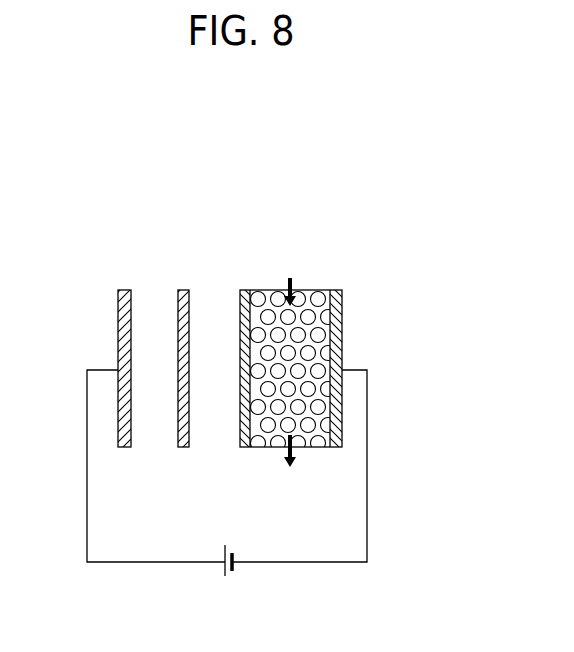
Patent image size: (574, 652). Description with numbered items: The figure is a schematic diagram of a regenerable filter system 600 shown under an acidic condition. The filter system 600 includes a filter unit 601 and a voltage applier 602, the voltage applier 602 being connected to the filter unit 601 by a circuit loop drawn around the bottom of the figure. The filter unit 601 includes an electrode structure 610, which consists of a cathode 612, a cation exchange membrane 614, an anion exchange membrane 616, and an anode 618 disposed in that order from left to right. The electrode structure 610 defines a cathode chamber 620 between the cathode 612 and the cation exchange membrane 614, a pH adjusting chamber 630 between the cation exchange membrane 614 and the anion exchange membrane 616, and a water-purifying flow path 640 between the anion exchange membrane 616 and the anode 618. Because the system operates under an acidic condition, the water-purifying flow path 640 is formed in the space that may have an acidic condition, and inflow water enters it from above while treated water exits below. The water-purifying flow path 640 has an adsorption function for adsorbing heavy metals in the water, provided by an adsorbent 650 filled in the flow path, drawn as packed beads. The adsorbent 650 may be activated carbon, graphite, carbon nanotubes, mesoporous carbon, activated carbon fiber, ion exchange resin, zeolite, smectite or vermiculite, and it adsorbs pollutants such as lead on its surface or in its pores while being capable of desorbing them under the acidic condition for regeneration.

The filter system 600 is at (202, 127).
The filter unit 601 is at (323, 358).
The voltage applier 602 is at (222, 572).
The electrode structure 610 is at (353, 193).
The cathode 612 is at (124, 288).
The cation exchange membrane 614 is at (183, 288).
The anion exchange membrane 616 is at (243, 288).
The anode 618 is at (335, 288).
The cathode chamber 620 is at (152, 449).
The pH adjusting chamber 630 is at (215, 449).
The water-purifying flow path 640 is at (324, 449).
The adsorbent 650 is at (257, 449).